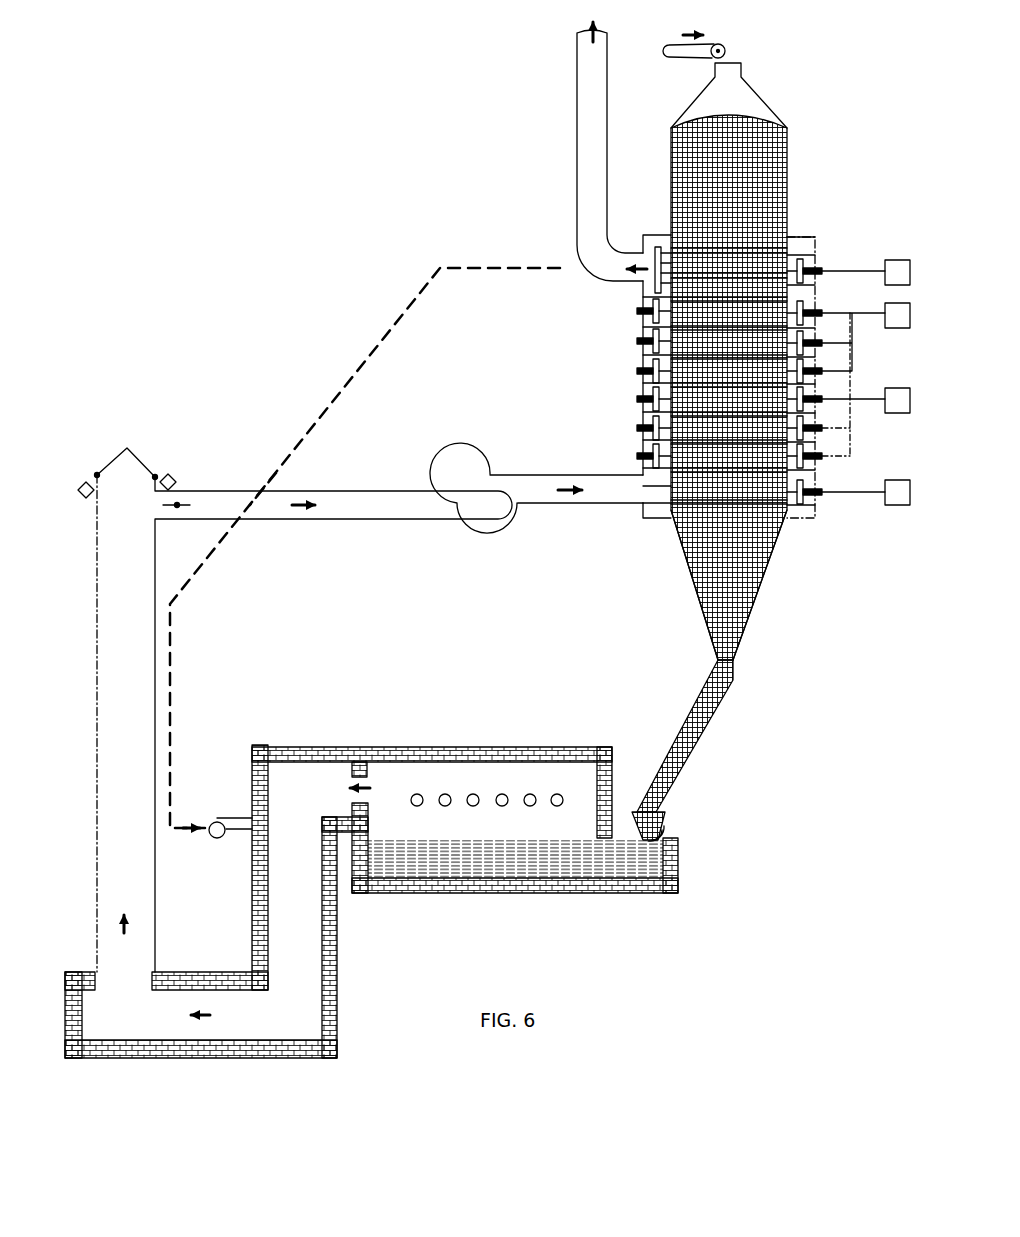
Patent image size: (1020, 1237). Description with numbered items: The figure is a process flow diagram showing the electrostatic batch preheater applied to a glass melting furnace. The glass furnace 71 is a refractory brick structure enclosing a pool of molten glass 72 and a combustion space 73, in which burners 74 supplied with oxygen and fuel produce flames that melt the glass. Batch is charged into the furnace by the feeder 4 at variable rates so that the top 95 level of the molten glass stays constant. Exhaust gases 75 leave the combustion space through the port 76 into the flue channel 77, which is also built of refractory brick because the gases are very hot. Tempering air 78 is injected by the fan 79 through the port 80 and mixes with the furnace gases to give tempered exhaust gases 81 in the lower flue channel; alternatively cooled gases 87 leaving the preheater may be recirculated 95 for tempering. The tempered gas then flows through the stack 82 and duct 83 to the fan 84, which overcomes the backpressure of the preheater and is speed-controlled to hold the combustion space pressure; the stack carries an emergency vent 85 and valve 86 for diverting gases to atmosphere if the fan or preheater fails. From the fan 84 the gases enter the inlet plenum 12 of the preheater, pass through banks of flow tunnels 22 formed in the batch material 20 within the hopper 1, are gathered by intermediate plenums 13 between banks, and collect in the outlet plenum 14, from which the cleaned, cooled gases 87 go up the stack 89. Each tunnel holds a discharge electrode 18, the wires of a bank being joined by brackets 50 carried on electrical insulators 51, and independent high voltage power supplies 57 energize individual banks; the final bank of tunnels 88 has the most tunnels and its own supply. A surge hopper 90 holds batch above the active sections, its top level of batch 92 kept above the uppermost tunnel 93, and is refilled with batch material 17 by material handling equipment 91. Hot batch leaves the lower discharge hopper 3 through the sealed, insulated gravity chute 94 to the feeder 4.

The hopper 1 is at (785, 233).
The discharge hopper 3 is at (692, 583).
The feeder 4 is at (662, 831).
The inlet plenum 12 is at (657, 516).
The second plenum 13 is at (648, 388).
The outlet plenum 14 is at (652, 238).
The batch material 17 is at (702, 28).
The discharge electrode 18 is at (663, 505).
The batch material 20 is at (768, 565).
The flow tunnels 22 is at (780, 525).
The brackets 50 is at (648, 423).
The electrical insulators 51 is at (635, 340).
The high voltage power supplies 57 is at (905, 265).
The glass furnace 71 is at (602, 752).
The pool of molten glass 72 is at (460, 858).
The combustion space 73 is at (455, 782).
The burners 74 is at (502, 793).
The exhaust gases 75 is at (342, 780).
The port 76 is at (357, 778).
The flue channel 77 is at (280, 770).
The tempering air 78 is at (202, 824).
The fan 79 is at (208, 820).
The port 80 is at (258, 831).
The tempered exhaust gases 81 is at (137, 925).
The stack 82 is at (318, 500).
The duct 83 is at (262, 502).
The fan 84 is at (480, 489).
The emergency vent 85 is at (95, 465).
The valve 86 is at (178, 504).
The cooled gases 87 is at (622, 270).
The final bank of tunnels 88 is at (800, 268).
The stack 89 is at (586, 88).
The surge hopper 90 is at (672, 156).
The material handling equipment 91 is at (668, 46).
The top level of batch 92 is at (765, 112).
The uppermost tunnel 93 is at (672, 213).
The gravity chute 94 is at (692, 748).
The recirculation 95 is at (528, 845).